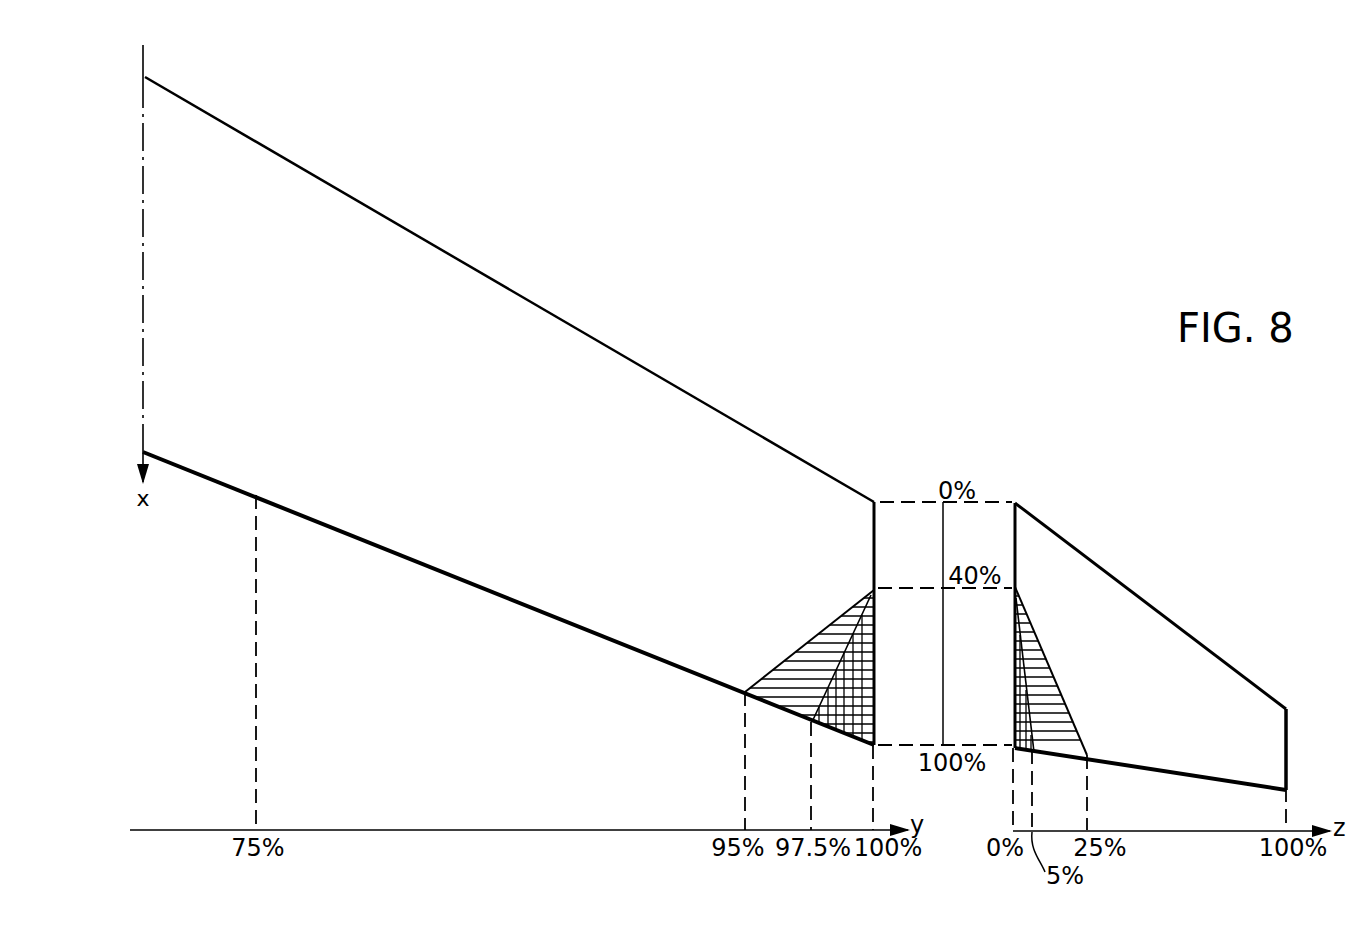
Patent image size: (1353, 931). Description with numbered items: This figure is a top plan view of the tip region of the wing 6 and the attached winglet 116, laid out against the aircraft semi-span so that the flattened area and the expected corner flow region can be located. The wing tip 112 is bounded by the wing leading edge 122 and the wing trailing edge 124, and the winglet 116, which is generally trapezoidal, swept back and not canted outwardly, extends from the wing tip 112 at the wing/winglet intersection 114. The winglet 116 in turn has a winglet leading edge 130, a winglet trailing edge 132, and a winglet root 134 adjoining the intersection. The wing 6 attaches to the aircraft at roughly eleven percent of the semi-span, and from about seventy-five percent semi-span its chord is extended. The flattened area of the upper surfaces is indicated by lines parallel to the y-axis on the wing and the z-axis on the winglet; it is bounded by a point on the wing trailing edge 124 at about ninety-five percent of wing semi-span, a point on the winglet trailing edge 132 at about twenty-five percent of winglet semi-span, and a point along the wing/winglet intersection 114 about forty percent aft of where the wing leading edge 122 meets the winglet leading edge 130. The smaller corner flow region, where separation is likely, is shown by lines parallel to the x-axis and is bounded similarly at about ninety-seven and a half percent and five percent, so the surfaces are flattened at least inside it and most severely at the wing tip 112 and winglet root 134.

The wing 6 is at (565, 411).
The wing tip 112 is at (868, 462).
The wing/winglet intersection 114 is at (880, 497).
The winglet 116 is at (1148, 628).
The wing leading edge 122 is at (750, 427).
The wing trailing edge 124 is at (552, 617).
The winglet leading edge 130 is at (1170, 617).
The winglet trailing edge 132 is at (1172, 772).
The winglet root 134 is at (1013, 505).